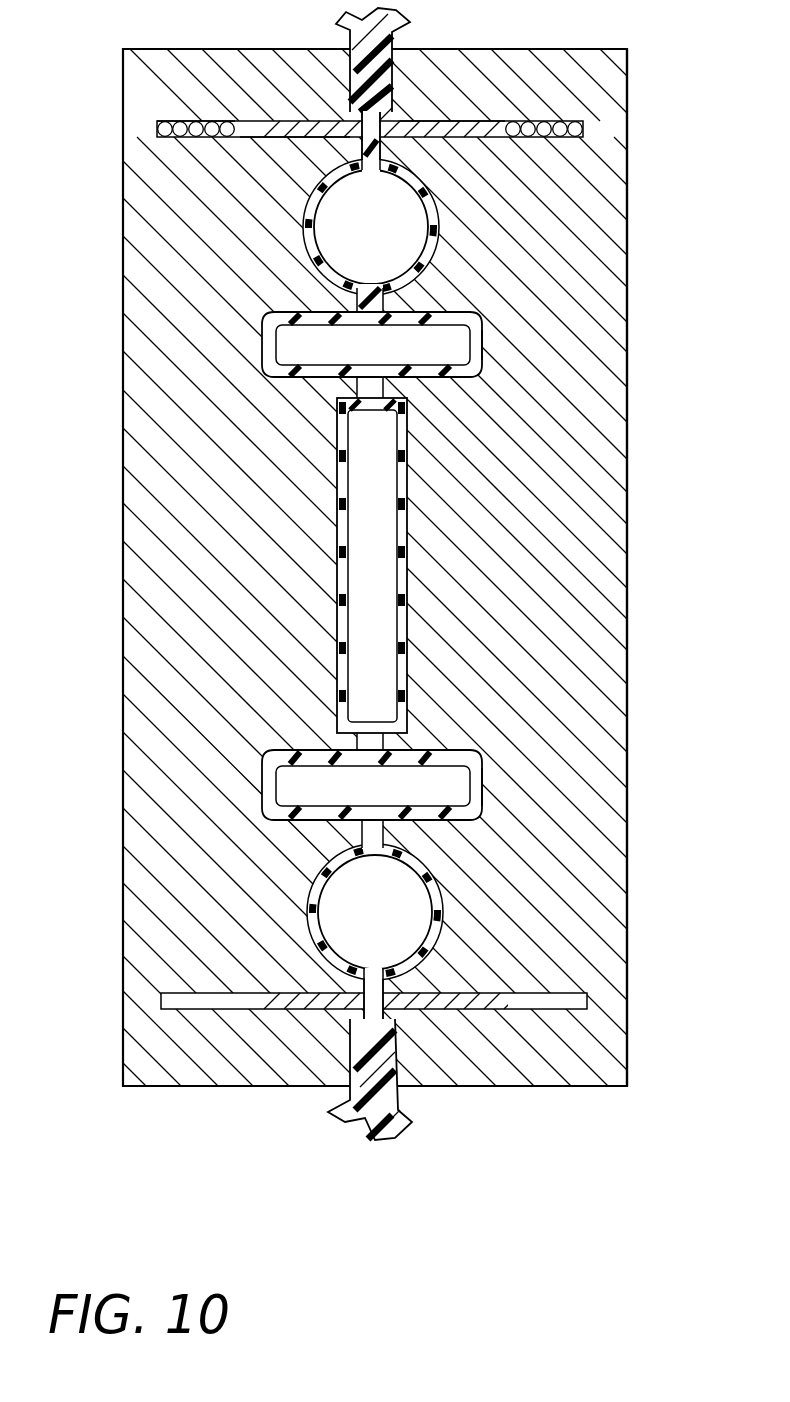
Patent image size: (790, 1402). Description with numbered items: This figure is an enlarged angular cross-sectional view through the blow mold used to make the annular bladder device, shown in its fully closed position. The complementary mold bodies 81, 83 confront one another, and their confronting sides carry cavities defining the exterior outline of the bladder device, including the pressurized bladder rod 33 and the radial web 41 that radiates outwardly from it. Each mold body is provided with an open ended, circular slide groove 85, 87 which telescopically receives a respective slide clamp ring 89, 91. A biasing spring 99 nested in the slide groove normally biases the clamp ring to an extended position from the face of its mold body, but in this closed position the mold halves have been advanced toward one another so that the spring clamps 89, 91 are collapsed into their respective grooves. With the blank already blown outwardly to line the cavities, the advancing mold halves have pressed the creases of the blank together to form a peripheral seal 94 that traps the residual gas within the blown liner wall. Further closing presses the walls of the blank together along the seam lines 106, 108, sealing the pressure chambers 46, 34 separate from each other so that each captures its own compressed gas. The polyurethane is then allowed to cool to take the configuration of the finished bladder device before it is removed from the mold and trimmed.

The bladder rod 33 is at (484, 350).
The pressure chamber 34 is at (390, 357).
The radial web 41 is at (350, 150).
The pressure chamber 46 is at (380, 208).
The mold body 81 is at (628, 433).
The mold body 83 is at (122, 432).
The slide groove 85 is at (572, 128).
The slide groove 87 is at (213, 124).
The slide clamp ring 89 is at (472, 128).
The slide clamp ring 91 is at (272, 130).
The peripheral seal 94 is at (384, 142).
The biasing spring 99 is at (158, 129).
The seam line 106 is at (373, 292).
The seam line 108 is at (374, 400).